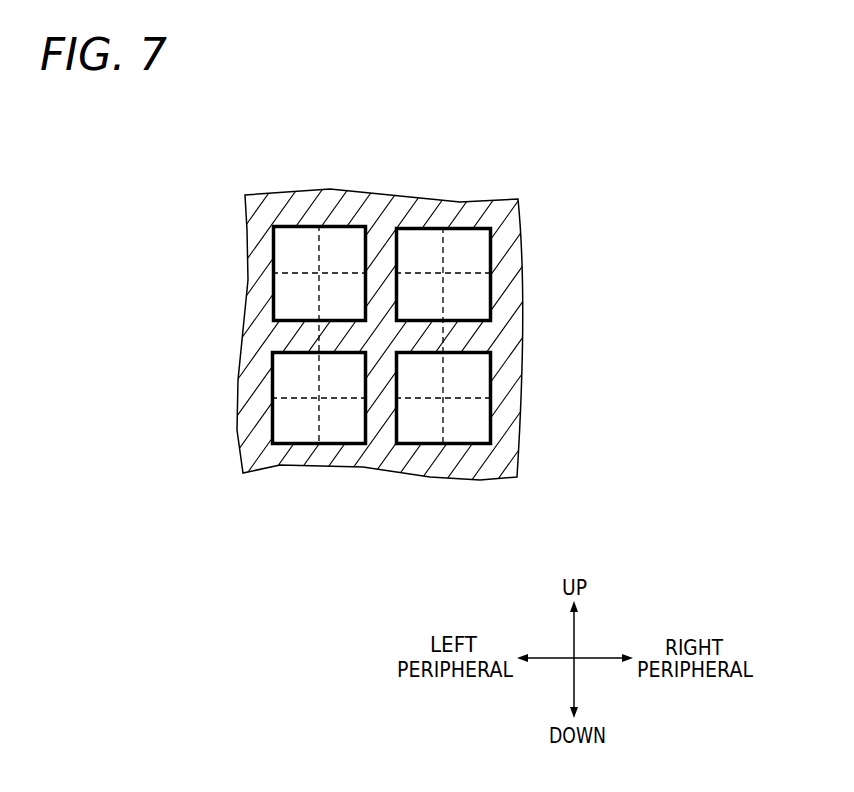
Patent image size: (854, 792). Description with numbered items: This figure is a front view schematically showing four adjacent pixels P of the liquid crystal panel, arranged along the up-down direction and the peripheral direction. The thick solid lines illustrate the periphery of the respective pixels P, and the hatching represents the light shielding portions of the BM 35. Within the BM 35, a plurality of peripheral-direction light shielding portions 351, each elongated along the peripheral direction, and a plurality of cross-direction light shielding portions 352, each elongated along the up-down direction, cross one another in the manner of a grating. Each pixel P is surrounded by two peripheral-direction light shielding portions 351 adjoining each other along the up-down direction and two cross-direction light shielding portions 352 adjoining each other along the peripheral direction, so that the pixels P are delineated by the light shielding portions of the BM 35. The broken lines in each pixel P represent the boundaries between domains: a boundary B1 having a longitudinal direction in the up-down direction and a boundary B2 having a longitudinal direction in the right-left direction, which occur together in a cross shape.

The BM 35 is at (266, 207).
The peripheral-direction light shielding portion 351 is at (466, 213).
The cross-direction light shielding portion 352 is at (382, 242).
The pixel P is at (335, 225).
The boundary B1 is at (319, 225).
The boundary B2 is at (292, 273).